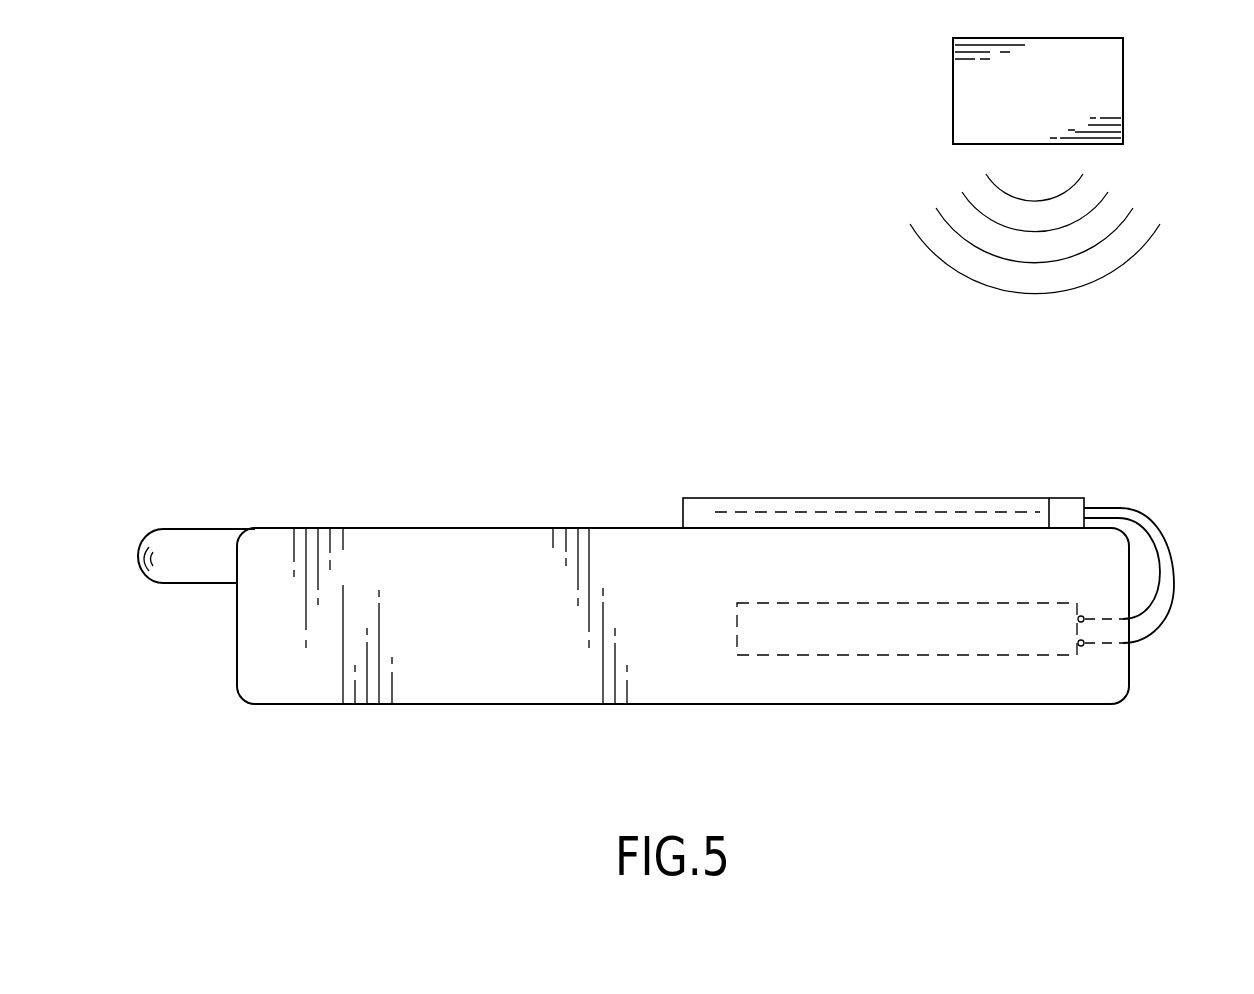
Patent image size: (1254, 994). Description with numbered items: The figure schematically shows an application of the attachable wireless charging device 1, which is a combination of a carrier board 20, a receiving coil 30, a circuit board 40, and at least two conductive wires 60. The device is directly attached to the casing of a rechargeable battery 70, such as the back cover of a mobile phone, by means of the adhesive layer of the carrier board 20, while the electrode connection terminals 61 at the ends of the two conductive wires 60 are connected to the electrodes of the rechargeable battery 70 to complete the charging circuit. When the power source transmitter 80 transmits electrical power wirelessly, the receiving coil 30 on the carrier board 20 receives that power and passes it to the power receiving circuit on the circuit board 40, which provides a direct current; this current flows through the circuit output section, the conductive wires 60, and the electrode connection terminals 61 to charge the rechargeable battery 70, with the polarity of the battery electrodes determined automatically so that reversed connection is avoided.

The attachable wireless charging device 1 is at (695, 574).
The carrier board 20 is at (690, 518).
The receiving coil 30 is at (753, 510).
The circuit board 40 is at (1066, 518).
The conductive wires 60 is at (1165, 553).
The electrode connection terminals 61 is at (1080, 612).
The rechargeable battery 70 is at (902, 650).
The power source transmitter 80 is at (1106, 79).